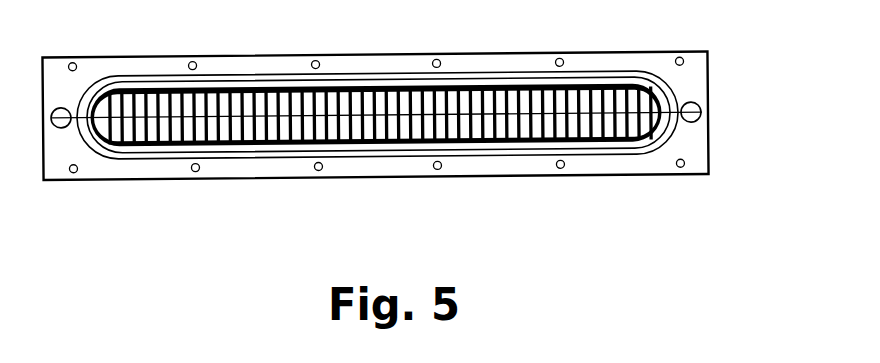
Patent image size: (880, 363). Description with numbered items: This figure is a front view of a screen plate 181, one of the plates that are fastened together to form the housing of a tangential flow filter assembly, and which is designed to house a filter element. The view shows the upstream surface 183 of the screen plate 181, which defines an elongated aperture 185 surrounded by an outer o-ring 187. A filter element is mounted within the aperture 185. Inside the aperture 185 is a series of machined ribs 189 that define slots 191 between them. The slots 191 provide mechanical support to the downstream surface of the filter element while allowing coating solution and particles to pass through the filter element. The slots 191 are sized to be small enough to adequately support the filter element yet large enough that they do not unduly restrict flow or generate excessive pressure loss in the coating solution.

The screen plate 181 is at (678, 50).
The upstream surface 183 is at (687, 143).
The aperture 185 is at (522, 145).
The outer o-ring 187 is at (403, 80).
The machined ribs 189 is at (163, 95).
The slots 191 is at (333, 97).